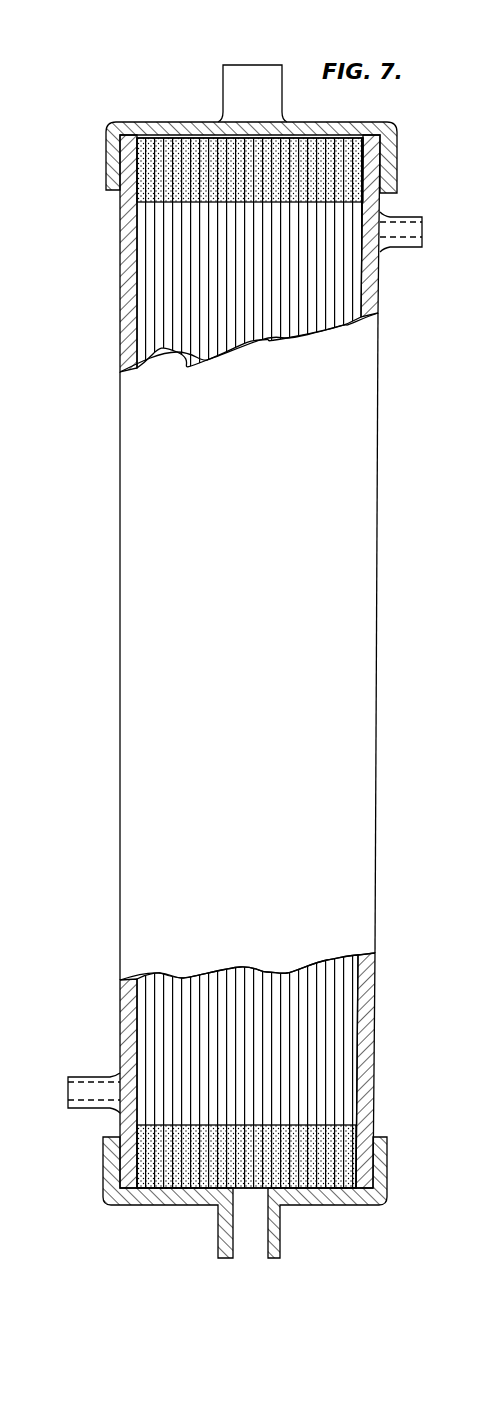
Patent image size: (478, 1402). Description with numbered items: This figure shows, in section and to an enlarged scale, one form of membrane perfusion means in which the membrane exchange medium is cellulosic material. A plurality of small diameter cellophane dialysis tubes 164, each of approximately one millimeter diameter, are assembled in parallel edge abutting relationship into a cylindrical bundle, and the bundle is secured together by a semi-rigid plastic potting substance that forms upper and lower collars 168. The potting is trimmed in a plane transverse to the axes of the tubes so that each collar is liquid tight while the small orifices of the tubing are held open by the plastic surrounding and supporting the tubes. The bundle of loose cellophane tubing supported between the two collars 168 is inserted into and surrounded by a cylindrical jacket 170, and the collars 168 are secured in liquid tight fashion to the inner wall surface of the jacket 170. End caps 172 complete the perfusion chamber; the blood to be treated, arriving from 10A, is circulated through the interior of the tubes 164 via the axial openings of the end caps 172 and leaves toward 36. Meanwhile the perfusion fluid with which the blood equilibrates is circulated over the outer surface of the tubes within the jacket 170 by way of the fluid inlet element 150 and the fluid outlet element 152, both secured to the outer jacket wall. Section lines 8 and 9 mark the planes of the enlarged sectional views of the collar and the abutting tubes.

The cylindrical jacket 170 is at (128, 654).
The end caps 172 is at (174, 128).
The collars 168 is at (332, 152).
The cellophane dialysis tubes 164 is at (330, 1003).
The fluid outlet element 152 is at (424, 232).
The fluid inlet element 150 is at (66, 1090).
The outlet destination 36 is at (258, 27).
The inlet source 10A is at (255, 1259).
The section line 8- 8 is at (88, 220).
The section line 9- 9 is at (90, 300).